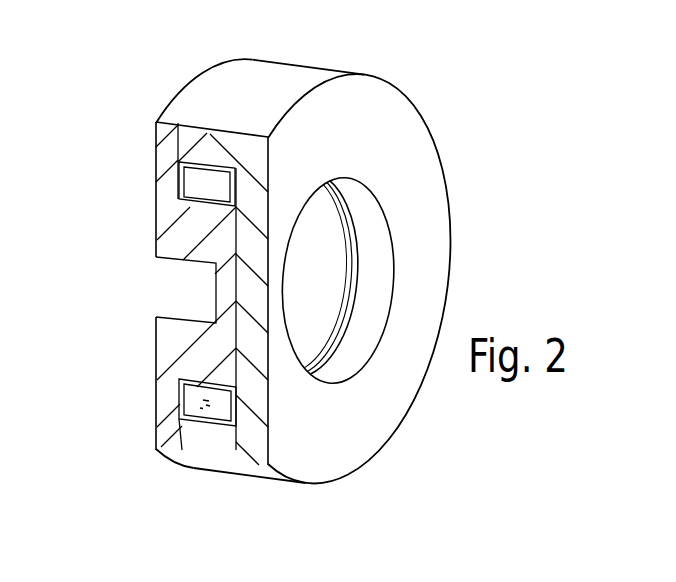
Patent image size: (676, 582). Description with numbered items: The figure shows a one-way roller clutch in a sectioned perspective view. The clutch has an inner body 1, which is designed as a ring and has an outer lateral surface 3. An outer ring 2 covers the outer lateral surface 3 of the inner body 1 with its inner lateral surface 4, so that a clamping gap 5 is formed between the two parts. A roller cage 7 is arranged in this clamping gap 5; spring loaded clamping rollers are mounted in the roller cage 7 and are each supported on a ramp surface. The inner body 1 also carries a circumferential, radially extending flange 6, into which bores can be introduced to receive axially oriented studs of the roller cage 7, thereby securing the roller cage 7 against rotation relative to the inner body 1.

The inner body 1 is at (178, 240).
The outer ring 2 is at (370, 125).
The outer lateral surface 3 is at (200, 207).
The inner lateral surface 4 is at (208, 162).
The clamping gap 5 is at (181, 187).
The flange 6 is at (178, 147).
The roller cage 7 is at (212, 382).